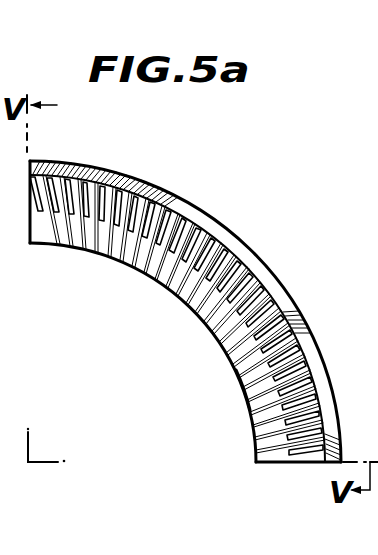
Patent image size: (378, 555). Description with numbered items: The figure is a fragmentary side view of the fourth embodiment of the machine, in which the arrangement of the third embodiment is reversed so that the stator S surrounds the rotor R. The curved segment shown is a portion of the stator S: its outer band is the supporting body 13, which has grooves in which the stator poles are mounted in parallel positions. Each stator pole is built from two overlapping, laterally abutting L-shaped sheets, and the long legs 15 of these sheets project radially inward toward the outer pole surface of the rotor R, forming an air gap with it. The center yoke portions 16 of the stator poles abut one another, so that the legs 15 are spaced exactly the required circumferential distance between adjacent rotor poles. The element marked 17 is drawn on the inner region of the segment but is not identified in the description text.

The supporting body 13 is at (166, 199).
The long legs 15 is at (93, 251).
The center yoke portions 16 is at (267, 298).
The teeth 17 is at (198, 316).
The rotor R is at (240, 385).
The stator S is at (295, 311).